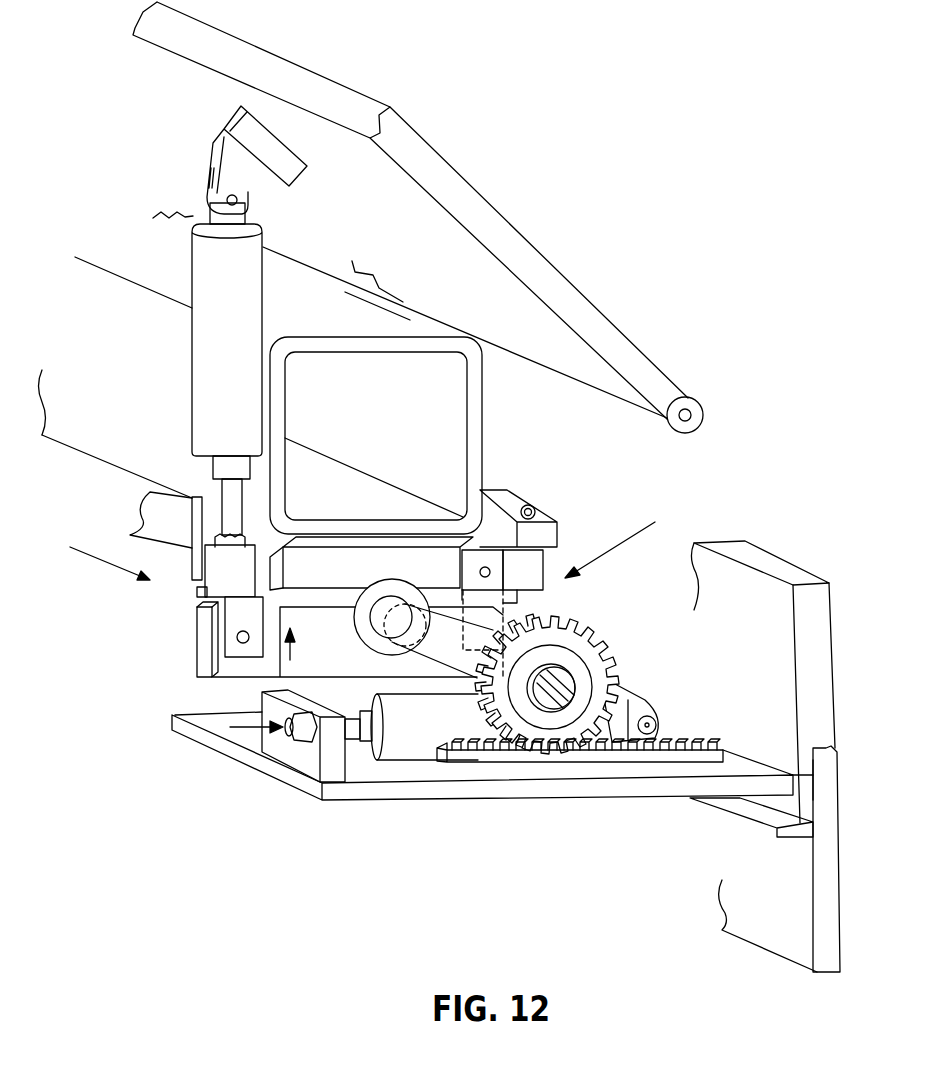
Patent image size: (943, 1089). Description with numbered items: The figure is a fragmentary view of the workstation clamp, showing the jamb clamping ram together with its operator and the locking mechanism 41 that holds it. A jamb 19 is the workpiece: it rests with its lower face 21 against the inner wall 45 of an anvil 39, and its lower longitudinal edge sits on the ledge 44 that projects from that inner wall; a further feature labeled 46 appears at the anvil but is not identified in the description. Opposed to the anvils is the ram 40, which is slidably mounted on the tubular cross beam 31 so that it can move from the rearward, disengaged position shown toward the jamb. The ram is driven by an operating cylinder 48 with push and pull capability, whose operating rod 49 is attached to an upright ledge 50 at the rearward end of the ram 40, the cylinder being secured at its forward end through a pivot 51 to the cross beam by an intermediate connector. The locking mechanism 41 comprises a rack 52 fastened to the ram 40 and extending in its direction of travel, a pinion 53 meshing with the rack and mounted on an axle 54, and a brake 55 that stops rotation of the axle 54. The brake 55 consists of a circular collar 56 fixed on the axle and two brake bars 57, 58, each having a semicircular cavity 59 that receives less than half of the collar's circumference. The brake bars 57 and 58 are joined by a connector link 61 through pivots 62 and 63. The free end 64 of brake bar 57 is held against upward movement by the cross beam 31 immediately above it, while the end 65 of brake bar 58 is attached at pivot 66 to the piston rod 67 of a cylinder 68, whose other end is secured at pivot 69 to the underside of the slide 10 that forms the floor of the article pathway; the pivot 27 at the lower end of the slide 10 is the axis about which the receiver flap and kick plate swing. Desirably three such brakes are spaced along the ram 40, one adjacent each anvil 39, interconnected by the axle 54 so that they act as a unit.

The slide 10 is at (495, 233).
The pivot 27 is at (687, 414).
The pivot 69 is at (238, 199).
The cylinder 68 is at (248, 367).
The tubular cross beam 31 is at (336, 333).
The piston rod 67 is at (230, 502).
The axle 54 is at (157, 533).
The brake 55 is at (90, 551).
The free end 64 is at (278, 553).
The pivot 62 is at (486, 568).
The connector link 61 is at (498, 568).
The locking mechanism 41 is at (632, 534).
The brake bar 57 is at (341, 589).
The semicircular cavity 59 is at (368, 594).
The circular collar 56 is at (437, 579).
The pivot 63 is at (504, 614).
The pinion 53 is at (586, 637).
The jamb 19 is at (770, 656).
The end 65 is at (208, 653).
The pivot 66 is at (243, 643).
The brake bar 58 is at (342, 668).
The operating rod 49 is at (349, 716).
The operating cylinder 48 is at (427, 747).
The upright ledge 50 is at (297, 756).
The ram 40 is at (553, 788).
The pivot 51 is at (649, 725).
The rack 52 is at (717, 714).
The lower face 21 is at (813, 773).
The flange 46 is at (808, 802).
The anvils 39 is at (840, 830).
The ledge 44 is at (793, 833).
The inner wall 45 is at (789, 922).